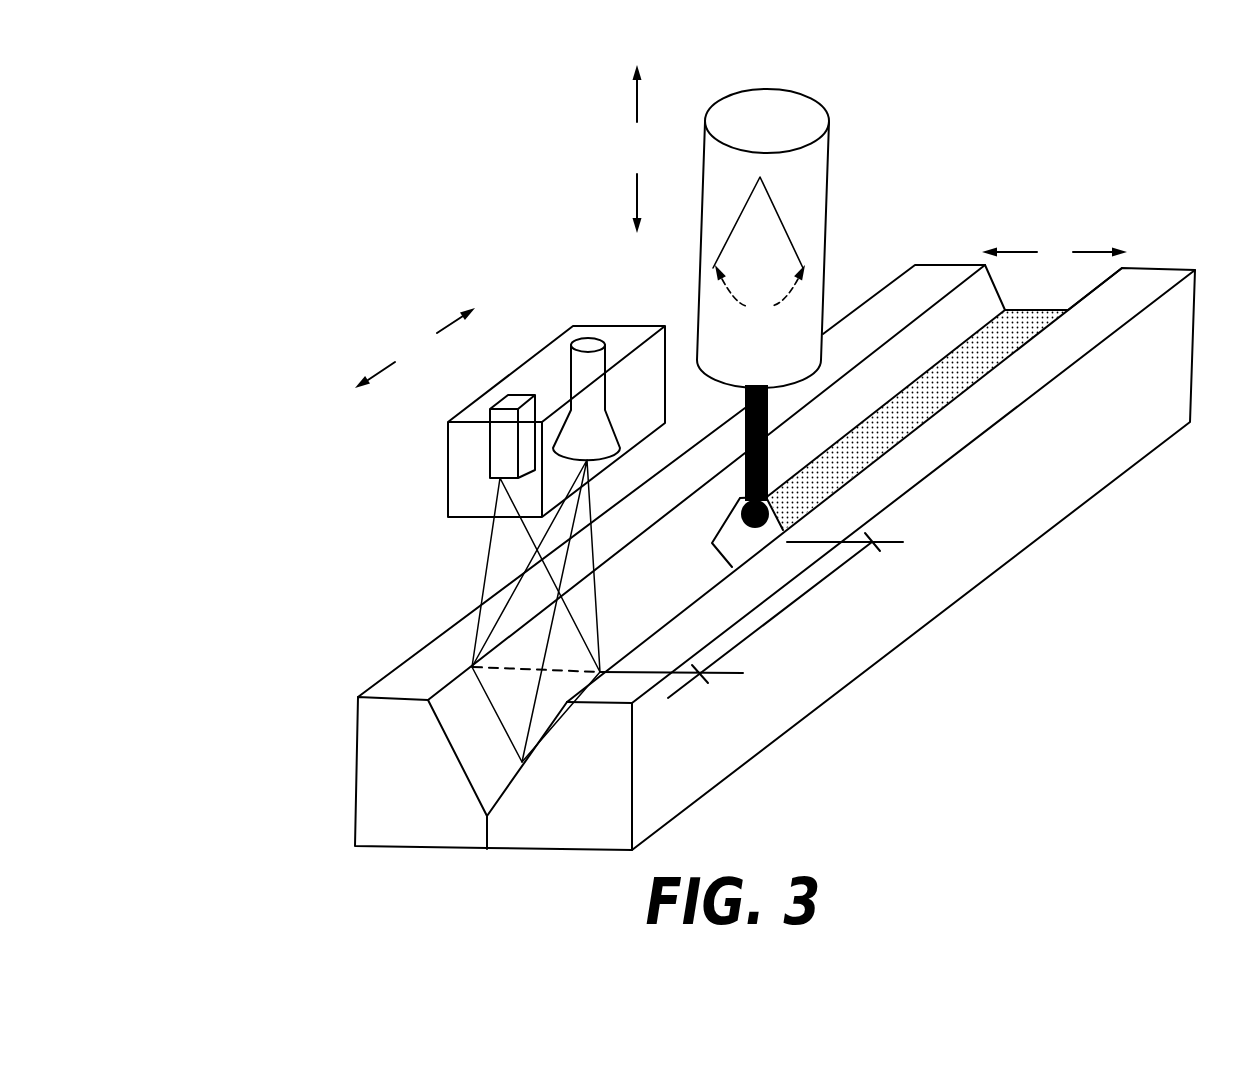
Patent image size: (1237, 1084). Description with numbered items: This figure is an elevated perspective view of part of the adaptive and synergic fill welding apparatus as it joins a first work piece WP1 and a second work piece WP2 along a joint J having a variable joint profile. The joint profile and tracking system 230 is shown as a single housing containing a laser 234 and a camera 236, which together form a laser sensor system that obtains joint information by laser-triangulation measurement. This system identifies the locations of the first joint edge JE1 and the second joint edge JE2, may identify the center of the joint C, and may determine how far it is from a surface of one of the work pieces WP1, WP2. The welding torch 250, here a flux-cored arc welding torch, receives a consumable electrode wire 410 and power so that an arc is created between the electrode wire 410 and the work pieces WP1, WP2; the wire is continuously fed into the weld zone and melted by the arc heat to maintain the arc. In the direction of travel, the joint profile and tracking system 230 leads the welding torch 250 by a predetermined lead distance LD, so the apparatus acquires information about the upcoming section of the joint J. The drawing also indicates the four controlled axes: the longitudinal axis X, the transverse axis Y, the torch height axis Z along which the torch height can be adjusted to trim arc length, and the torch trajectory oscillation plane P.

The joint profile and tracking system 230 is at (448, 423).
The laser 234 is at (491, 468).
The camera 236 is at (587, 338).
The welding torch 250 is at (826, 200).
The consumable electrode wire 410 is at (747, 423).
The first work piece WP1 is at (356, 733).
The second work piece WP2 is at (633, 763).
The joint J is at (487, 836).
The first joint edge JE1 is at (450, 680).
The second joint edge JE2 is at (601, 676).
The center of the joint C is at (532, 672).
The lead distance LD is at (793, 605).
The longitudinal axis (X-direction) X is at (415, 348).
The transverse axis (Y-direction) Y is at (1054, 260).
The torch height axis (Z-direction) Z is at (636, 149).
The torch trajectory oscillation plane (P-direction) P is at (759, 254).